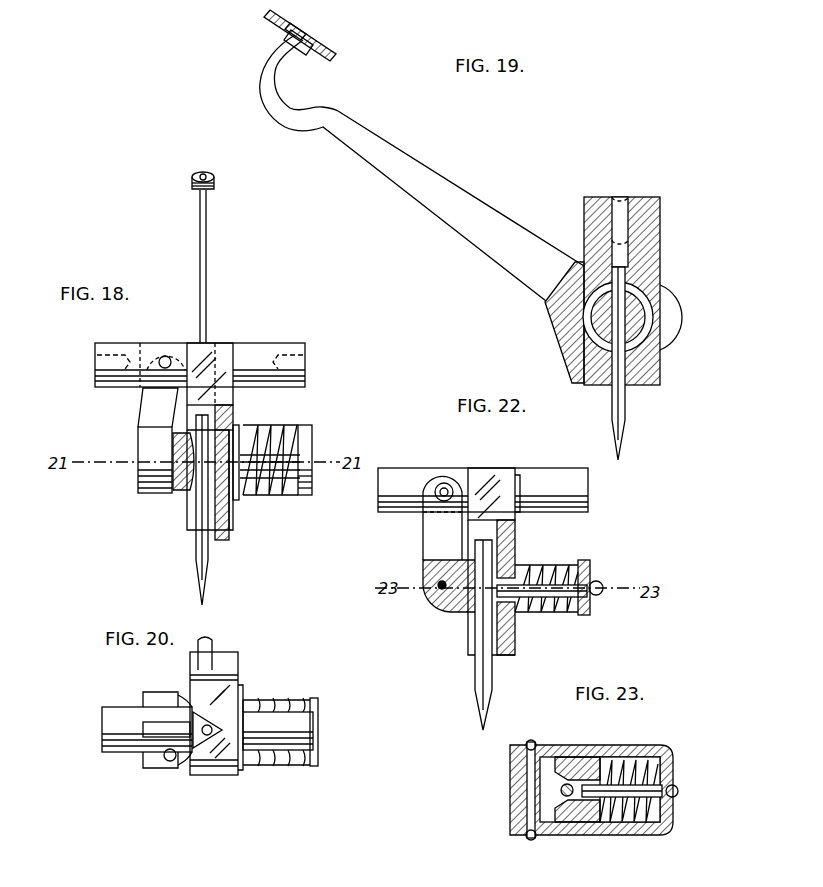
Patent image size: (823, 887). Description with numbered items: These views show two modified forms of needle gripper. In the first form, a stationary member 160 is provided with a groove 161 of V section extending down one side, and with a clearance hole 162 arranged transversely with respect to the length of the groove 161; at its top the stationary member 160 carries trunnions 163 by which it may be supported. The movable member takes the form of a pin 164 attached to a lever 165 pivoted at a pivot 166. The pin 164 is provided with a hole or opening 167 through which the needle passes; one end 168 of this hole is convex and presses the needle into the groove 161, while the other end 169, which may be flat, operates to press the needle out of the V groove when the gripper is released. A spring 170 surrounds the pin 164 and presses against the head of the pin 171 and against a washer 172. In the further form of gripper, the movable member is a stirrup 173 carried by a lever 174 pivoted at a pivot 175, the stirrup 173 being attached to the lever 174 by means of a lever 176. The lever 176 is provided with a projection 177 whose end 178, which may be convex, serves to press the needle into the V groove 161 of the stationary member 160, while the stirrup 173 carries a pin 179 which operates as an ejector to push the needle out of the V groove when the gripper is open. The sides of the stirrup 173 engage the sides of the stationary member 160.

In FIG. 18, the stationary member 160 is at (236, 414).
In FIG. 19, the stationary member 160 is at (642, 278).
In FIG. 22, the stationary member 160 is at (516, 532).
In FIG. 23, the stationary member 160 is at (575, 762).
In FIG. 20, the groove 161 is at (202, 718).
In FIG. 23, the groove 161 is at (574, 796).
In FIG. 18, the clearance hole 162 is at (236, 512).
In FIG. 19, the clearance hole 162 is at (652, 352).
In FIG. 18, the trunnions 163 is at (128, 348).
In FIG. 20, the trunnions 163 is at (102, 720).
In FIG. 19, the trunnions 163 is at (652, 214).
In FIG. 22, the trunnions 163 is at (413, 474).
In FIG. 18, the pin 164 is at (268, 447).
In FIG. 20, the pin 164 is at (283, 705).
In FIG. 19, the pin 164 is at (645, 324).
In FIG. 18, the lever 165 is at (145, 404).
In FIG. 20, the lever 165 is at (160, 728).
In FIG. 18, the pivot 166 is at (168, 358).
In FIG. 20, the pivot 166 is at (160, 760).
In FIG. 18, the hole or opening 167 is at (210, 455).
In FIG. 18, the convex end 168 is at (178, 460).
In FIG. 18, the flat end 169 is at (222, 478).
In FIG. 18, the spring 170 is at (280, 490).
In FIG. 20, the spring 170 is at (292, 760).
In FIG. 18, the head of the pin 171 is at (305, 440).
In FIG. 20, the head of the pin 171 is at (310, 744).
In FIG. 18, the washer 172 is at (240, 494).
In FIG. 20, the washer 172 is at (244, 770).
In FIG. 22, the stirrup 173 is at (586, 568).
In FIG. 23, the stirrup 173 is at (642, 748).
In FIG. 22, the lever 174 is at (440, 541).
In FIG. 22, the pivot 175 is at (450, 487).
In FIG. 22, the lever 176 is at (430, 590).
In FIG. 23, the lever 176 is at (524, 776).
In FIG. 23, the projection 177 is at (534, 838).
In FIG. 22, the end of projection 178 is at (445, 604).
In FIG. 22, the pin 179 is at (540, 605).
In FIG. 23, the pin 179 is at (642, 790).